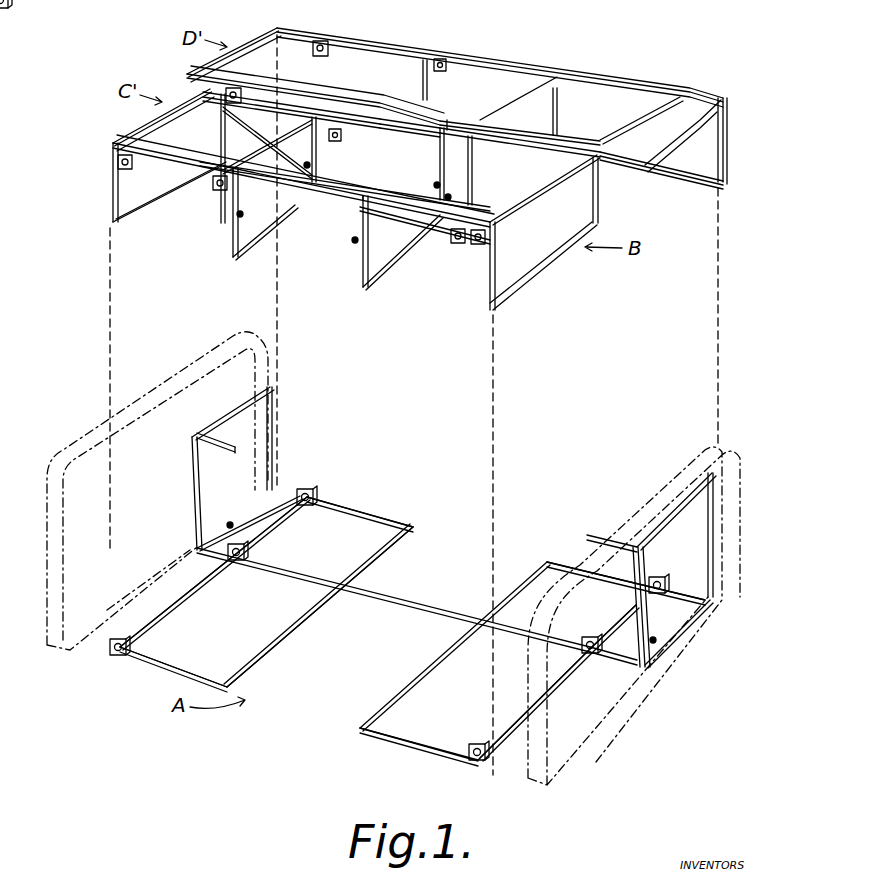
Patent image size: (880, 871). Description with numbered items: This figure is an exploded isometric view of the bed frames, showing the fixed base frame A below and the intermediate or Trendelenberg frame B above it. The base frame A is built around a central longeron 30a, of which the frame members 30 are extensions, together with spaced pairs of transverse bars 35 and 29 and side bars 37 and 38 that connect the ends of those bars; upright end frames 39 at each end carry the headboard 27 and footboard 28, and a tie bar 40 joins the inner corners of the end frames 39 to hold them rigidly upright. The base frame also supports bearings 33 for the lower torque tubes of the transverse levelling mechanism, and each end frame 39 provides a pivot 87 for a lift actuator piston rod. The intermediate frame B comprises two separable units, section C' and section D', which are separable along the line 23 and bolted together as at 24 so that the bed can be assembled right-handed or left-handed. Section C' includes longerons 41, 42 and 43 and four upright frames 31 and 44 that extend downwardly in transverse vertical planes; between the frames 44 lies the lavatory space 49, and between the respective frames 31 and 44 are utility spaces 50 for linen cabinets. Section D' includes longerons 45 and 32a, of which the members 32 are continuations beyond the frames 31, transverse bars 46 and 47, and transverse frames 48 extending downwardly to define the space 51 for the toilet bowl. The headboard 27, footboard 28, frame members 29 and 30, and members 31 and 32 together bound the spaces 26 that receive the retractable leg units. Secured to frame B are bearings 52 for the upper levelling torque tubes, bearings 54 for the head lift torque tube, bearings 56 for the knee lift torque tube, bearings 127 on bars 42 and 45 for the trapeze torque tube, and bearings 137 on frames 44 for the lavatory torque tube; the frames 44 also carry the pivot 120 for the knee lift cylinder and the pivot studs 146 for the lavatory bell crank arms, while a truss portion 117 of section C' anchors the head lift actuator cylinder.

The line 23 is at (318, 98).
The bolted connection 24 is at (283, 92).
The spaces 26 is at (185, 572).
The headboard 27 is at (92, 422).
The footboard 28 is at (745, 458).
The transverse bars 29 is at (165, 617).
The frame members 30 is at (616, 663).
The central longeron 30a is at (407, 603).
The upright frames 31 is at (510, 232).
The frame members 32 is at (617, 166).
The longeron 32a is at (460, 118).
The bearings 33 is at (120, 638).
The transverse bars 35 is at (268, 650).
The side bar 37 is at (165, 672).
The side bar 38 is at (364, 521).
The upright end frames 39 is at (189, 461).
The tie bar 40 is at (238, 447).
The longeron 41 is at (163, 120).
The longeron 42 is at (398, 138).
The longeron 43 is at (447, 127).
The upright frames 44 is at (232, 242).
The longeron 45 is at (500, 67).
The transverse bar 46 is at (680, 142).
The transverse bar 47 is at (626, 130).
The transverse frames 48 is at (420, 90).
The lavatory space 49 is at (316, 285).
The utility spaces 50 is at (170, 241).
The space 51 is at (470, 75).
The bearings 52 is at (329, 44).
The bearings 54 is at (418, 60).
The bearings 56 is at (455, 244).
The pivot 87 is at (231, 522).
The truss portion 117 is at (355, 182).
The pivot 120 is at (448, 197).
The bearings 127 is at (442, 72).
The bearings 137 is at (311, 165).
The pivot studs 146 is at (243, 213).